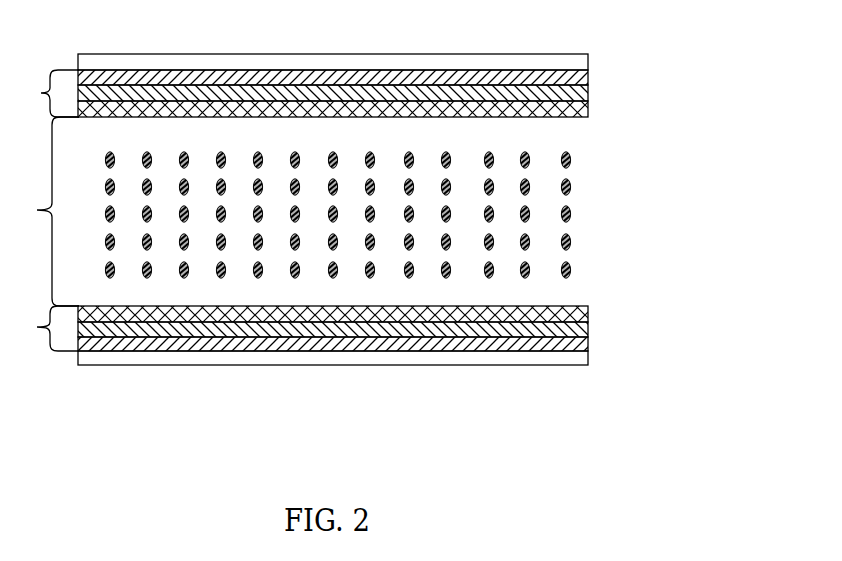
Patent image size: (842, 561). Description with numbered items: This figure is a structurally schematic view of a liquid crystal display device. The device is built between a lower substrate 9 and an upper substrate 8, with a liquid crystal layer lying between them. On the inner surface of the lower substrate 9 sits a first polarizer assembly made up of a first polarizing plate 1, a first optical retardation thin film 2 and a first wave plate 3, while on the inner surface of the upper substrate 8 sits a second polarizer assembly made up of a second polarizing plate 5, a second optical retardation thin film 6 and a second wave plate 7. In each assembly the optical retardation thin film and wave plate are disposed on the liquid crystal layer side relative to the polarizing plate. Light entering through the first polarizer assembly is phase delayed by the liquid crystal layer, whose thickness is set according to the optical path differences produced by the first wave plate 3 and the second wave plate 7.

The first polarizing plate 1 is at (589, 346).
The first optical retardation thin film 2 is at (589, 312).
The first wave plate 3 is at (589, 330).
The second polarizing plate 5 is at (589, 77).
The second optical retardation thin film 6 is at (589, 110).
The second wave plate 7 is at (589, 93).
The upper substrate 8 is at (508, 63).
The lower substrate 9 is at (488, 358).